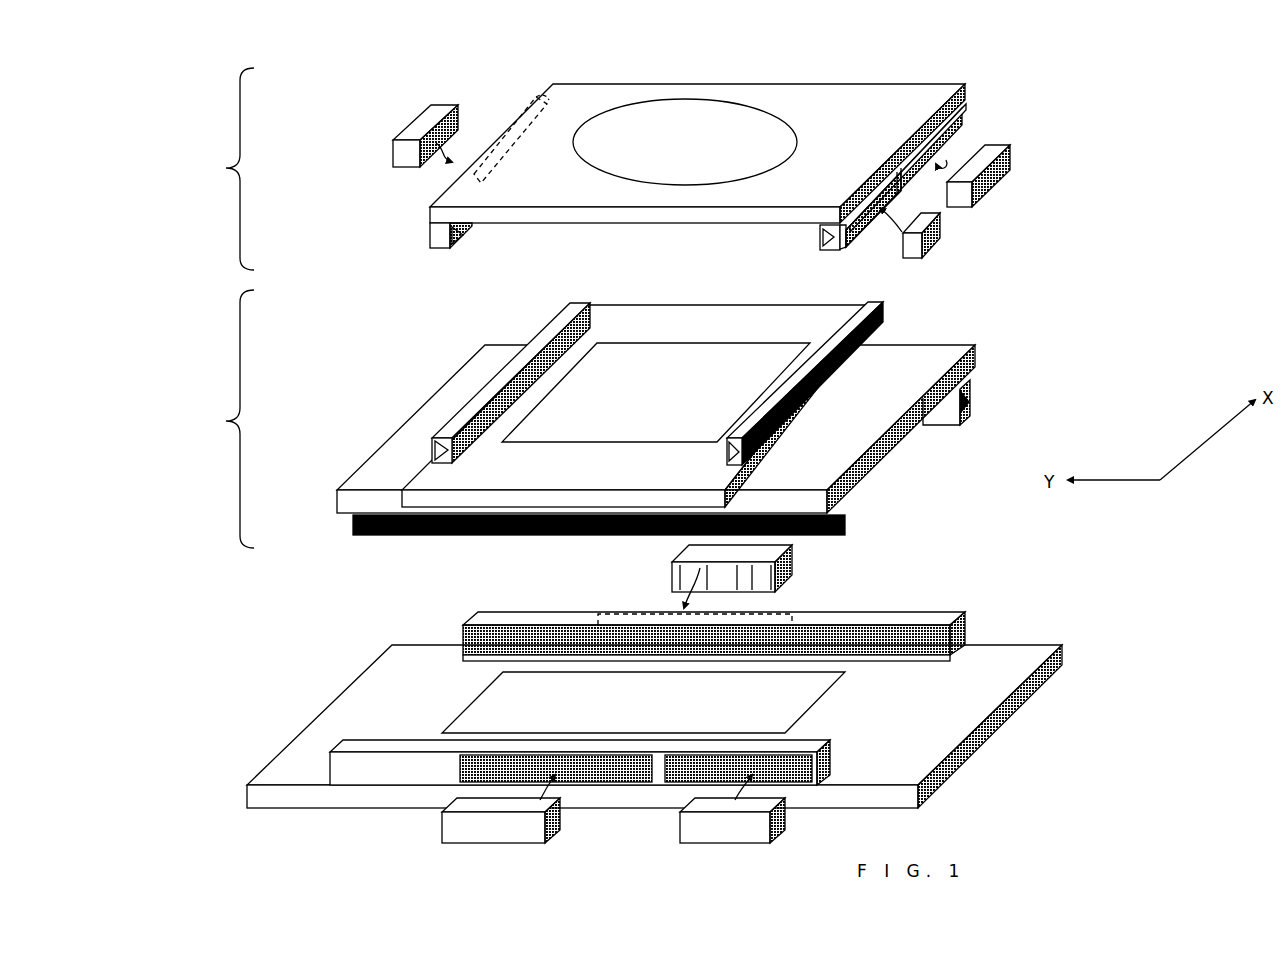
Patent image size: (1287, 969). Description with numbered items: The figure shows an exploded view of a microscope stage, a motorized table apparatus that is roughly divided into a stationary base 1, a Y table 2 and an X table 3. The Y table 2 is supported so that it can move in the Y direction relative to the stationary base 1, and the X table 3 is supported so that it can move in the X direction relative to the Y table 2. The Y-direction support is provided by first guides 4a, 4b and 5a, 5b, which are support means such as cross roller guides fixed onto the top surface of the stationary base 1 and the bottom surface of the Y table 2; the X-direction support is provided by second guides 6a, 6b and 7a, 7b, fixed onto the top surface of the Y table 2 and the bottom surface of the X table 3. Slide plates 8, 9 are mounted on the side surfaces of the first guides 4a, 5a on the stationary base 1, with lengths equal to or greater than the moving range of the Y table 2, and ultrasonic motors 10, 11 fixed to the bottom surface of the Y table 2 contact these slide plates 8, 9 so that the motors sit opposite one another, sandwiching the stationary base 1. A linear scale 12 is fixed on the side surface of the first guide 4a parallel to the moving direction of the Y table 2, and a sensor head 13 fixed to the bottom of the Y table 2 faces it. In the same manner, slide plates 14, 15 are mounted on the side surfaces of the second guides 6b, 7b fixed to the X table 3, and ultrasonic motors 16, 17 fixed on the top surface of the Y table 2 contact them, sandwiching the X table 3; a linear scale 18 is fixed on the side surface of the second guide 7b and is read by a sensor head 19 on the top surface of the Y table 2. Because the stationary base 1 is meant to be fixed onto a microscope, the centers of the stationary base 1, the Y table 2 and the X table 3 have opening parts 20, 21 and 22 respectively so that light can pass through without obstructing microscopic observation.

The stationary base 1 is at (285, 746).
The Y table 2 is at (228, 419).
The X table 3 is at (228, 169).
The first guide 4a is at (830, 762).
The first guide 4b is at (852, 497).
The first guide 5a is at (965, 628).
The first guide 5b is at (985, 393).
The second guide 6a is at (565, 314).
The second guide 6b is at (430, 240).
The second guide 7a is at (832, 328).
The second guide 7b is at (830, 250).
The slide plate 8 is at (452, 767).
The slide plate 9 is at (598, 614).
The ultrasonic motor 10 is at (488, 845).
The ultrasonic motor 11 is at (672, 575).
The linear scale 12 is at (770, 800).
The sensor head 13 is at (708, 845).
The slide plate 14 is at (958, 125).
The slide plate 15 is at (534, 104).
The ultrasonic motor 16 is at (1012, 170).
The ultrasonic motor 17 is at (393, 128).
The linear scale 18 is at (860, 236).
The sensor head 19 is at (945, 245).
The opening part 20 is at (490, 700).
The opening part 21 is at (650, 357).
The opening part 22 is at (722, 118).